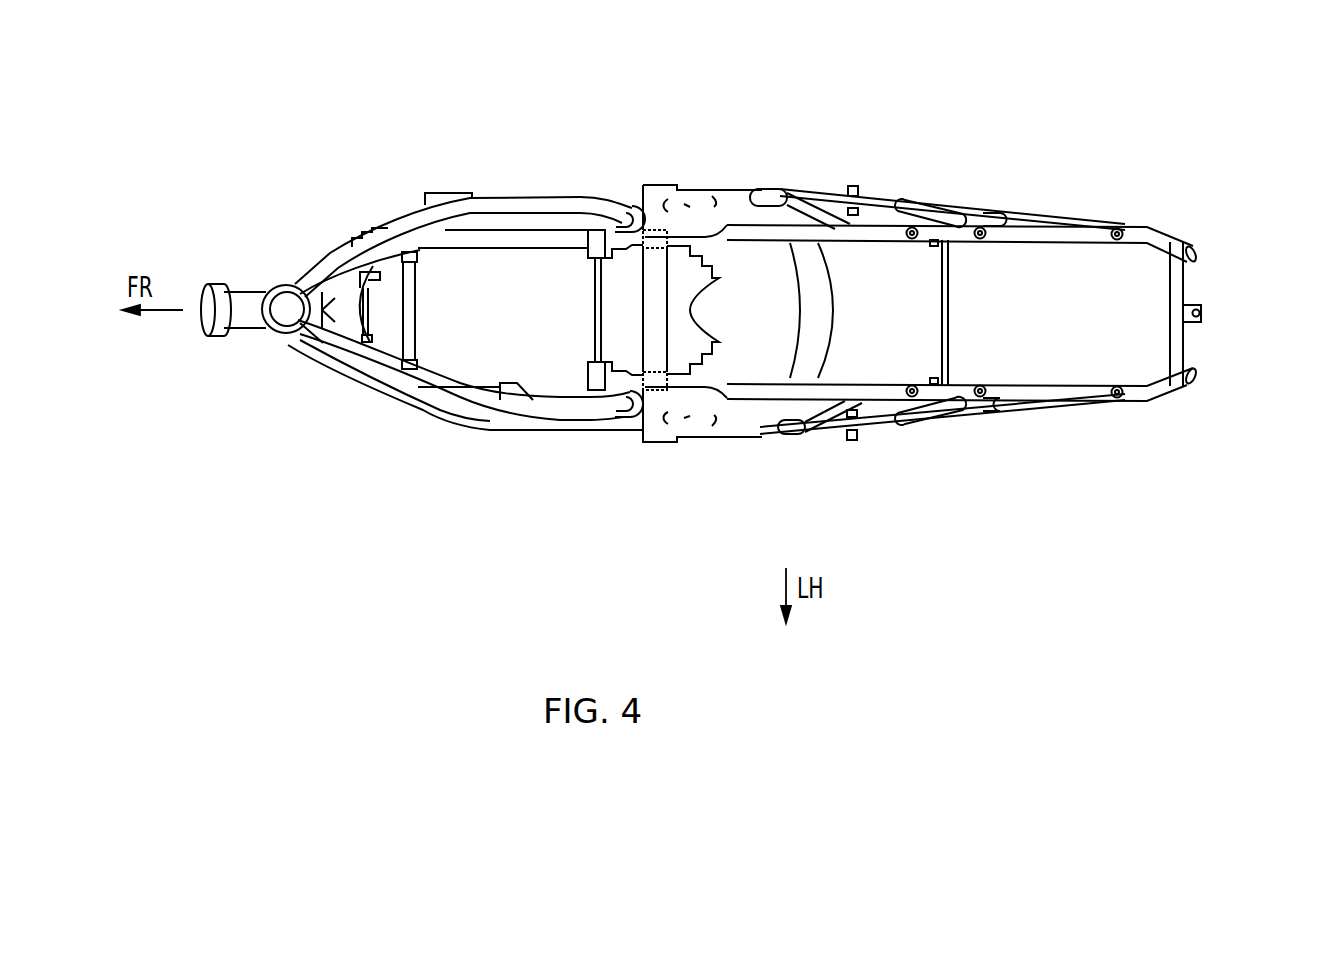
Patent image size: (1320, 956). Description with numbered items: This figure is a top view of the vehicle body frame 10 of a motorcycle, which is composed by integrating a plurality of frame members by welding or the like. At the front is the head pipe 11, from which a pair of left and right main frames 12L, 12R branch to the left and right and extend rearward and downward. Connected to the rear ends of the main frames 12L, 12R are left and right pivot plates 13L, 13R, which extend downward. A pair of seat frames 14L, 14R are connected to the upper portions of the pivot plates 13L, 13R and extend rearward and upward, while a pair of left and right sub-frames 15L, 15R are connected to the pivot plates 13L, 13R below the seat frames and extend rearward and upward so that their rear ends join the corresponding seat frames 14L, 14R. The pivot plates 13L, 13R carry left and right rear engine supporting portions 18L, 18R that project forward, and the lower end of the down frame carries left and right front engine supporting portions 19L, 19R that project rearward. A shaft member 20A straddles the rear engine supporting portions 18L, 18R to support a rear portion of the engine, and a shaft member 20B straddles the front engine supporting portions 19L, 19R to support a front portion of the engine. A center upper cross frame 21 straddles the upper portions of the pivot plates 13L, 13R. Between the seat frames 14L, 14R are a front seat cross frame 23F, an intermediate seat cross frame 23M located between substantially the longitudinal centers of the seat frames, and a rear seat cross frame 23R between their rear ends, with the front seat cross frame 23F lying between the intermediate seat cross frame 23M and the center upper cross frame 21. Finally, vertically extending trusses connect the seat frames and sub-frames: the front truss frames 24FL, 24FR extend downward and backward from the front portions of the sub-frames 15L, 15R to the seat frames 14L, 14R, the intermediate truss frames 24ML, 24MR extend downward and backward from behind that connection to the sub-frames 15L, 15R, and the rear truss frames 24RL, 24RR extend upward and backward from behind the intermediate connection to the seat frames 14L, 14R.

The vehicle body frame 10 is at (1037, 92).
The head pipe 11 is at (250, 300).
The right main frame 12R is at (553, 199).
The left main frame 12L is at (546, 430).
The right pivot plate 13R is at (706, 197).
The left pivot plate 13L is at (420, 430).
The right seat frame 14R is at (865, 233).
The left seat frame 14L is at (865, 392).
The right sub-frame 15R is at (886, 191).
The left sub-frame 15L is at (888, 432).
The right rear engine supporting portion 18R is at (621, 241).
The left rear engine supporting portion 18L is at (614, 410).
The right front engine supporting portion 19R is at (367, 285).
The left front engine supporting portion 19L is at (368, 338).
The shaft member 20A is at (594, 314).
The shaft member 20B is at (366, 315).
The center upper cross frame 21 is at (664, 316).
The front seat cross frame 23F is at (822, 318).
The intermediate seat cross frame 23M is at (948, 319).
The rear seat cross frame 23R is at (1178, 289).
The right front truss frame 24FR is at (830, 190).
The left front truss frame 24FL is at (826, 420).
The right intermediate truss frame 24MR is at (946, 196).
The left intermediate truss frame 24ML is at (945, 417).
The right rear truss frame 24RR is at (1016, 193).
The left rear truss frame 24RL is at (1005, 415).